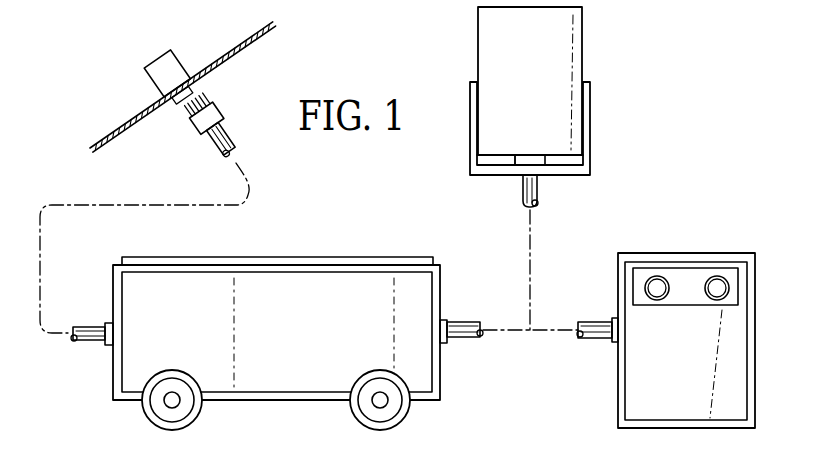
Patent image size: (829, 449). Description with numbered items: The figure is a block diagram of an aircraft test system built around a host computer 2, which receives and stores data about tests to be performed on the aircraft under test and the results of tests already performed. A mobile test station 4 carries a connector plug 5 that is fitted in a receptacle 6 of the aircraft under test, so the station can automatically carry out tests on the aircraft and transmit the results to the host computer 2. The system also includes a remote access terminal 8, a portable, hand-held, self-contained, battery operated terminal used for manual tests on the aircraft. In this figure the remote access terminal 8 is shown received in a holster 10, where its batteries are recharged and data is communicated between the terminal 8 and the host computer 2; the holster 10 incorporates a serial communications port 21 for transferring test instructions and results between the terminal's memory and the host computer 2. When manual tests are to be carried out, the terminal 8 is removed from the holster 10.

The host computer 2 is at (620, 365).
The mobile test station 4 is at (428, 256).
The connector plug 5 is at (220, 113).
The receptacle 6 is at (164, 53).
The remote access terminal 8 is at (583, 54).
The holster 10 is at (592, 107).
The serial communications port 21 is at (545, 160).